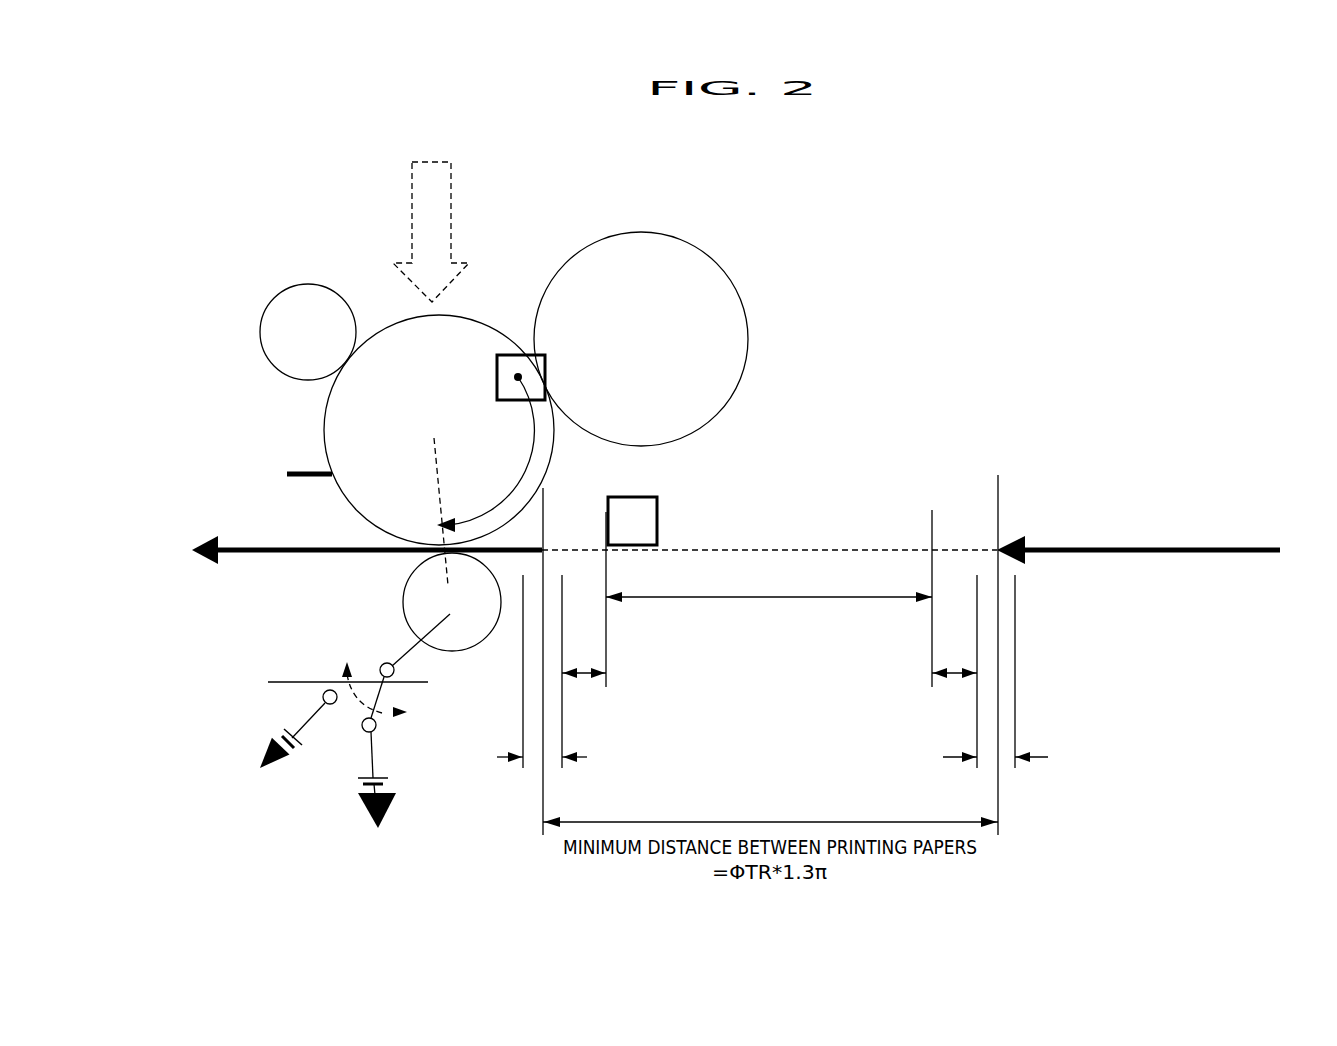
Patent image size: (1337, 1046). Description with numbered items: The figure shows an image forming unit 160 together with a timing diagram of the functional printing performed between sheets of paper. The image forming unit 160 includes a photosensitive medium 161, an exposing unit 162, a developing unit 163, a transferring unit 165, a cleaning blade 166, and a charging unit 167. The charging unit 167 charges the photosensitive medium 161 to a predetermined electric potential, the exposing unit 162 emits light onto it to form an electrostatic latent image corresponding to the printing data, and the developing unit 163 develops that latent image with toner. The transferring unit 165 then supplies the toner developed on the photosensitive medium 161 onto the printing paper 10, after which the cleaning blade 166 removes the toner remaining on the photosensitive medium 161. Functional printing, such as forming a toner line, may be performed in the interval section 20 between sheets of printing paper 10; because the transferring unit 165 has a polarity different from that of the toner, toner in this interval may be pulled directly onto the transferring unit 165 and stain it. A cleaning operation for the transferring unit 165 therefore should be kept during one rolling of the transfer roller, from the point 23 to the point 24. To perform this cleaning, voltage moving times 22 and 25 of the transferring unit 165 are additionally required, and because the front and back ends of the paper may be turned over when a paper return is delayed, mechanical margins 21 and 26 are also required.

The printing paper 10 is at (312, 556).
The interval section 20 is at (771, 498).
The mechanical margin 21 is at (535, 755).
The voltage moving time 22 is at (586, 672).
The start of one rolling of the transfer roller 23 is at (609, 595).
The end of one rolling of the transfer roller 24 is at (928, 595).
The voltage moving time 25 is at (957, 672).
The mechanical margin 26 is at (1008, 756).
The image forming unit 160 is at (854, 183).
The photosensitive medium 161 is at (475, 318).
The exposing unit 162 is at (451, 162).
The developing unit 163 is at (640, 231).
The transferring unit 165 is at (463, 652).
The cleaning blade 166 is at (292, 472).
The charging unit 167 is at (308, 284).